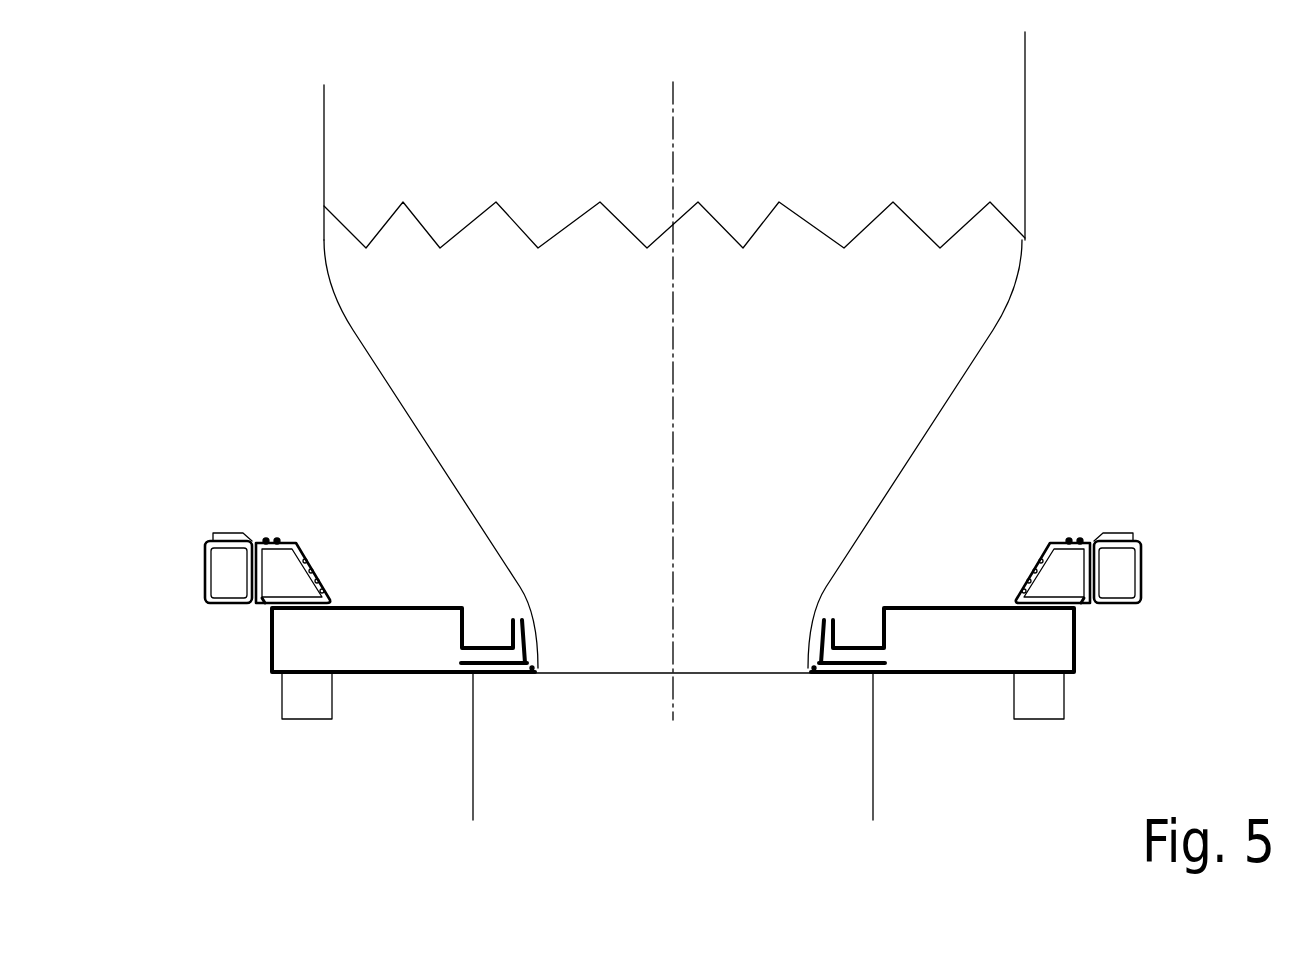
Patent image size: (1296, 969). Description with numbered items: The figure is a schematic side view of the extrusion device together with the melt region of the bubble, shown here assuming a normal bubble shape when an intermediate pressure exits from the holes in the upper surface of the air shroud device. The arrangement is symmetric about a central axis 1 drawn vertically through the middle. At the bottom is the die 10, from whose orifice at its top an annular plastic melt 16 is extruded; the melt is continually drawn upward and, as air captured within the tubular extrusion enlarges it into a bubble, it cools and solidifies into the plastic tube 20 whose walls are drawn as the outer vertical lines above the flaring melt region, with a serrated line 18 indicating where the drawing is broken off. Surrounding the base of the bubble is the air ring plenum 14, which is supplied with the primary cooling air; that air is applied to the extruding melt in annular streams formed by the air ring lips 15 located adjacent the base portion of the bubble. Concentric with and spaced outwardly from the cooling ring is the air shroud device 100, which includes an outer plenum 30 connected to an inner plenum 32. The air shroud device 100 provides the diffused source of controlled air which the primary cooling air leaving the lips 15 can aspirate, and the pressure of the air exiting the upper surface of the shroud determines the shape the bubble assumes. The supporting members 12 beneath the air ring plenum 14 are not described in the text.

The central axis 1 is at (672, 137).
The die 10 is at (533, 792).
The support leg 12 is at (303, 718).
The air ring plenum 14 is at (283, 647).
The air ring lips 15 is at (510, 608).
The annular plastic melt 16 is at (433, 438).
The serrated edge 18 is at (787, 203).
The cooled, solidified plastic tube 20 is at (1025, 68).
The outer plenum 30 is at (205, 582).
The inner plenum 32 is at (1033, 573).
The air shroud device 100 is at (1108, 540).